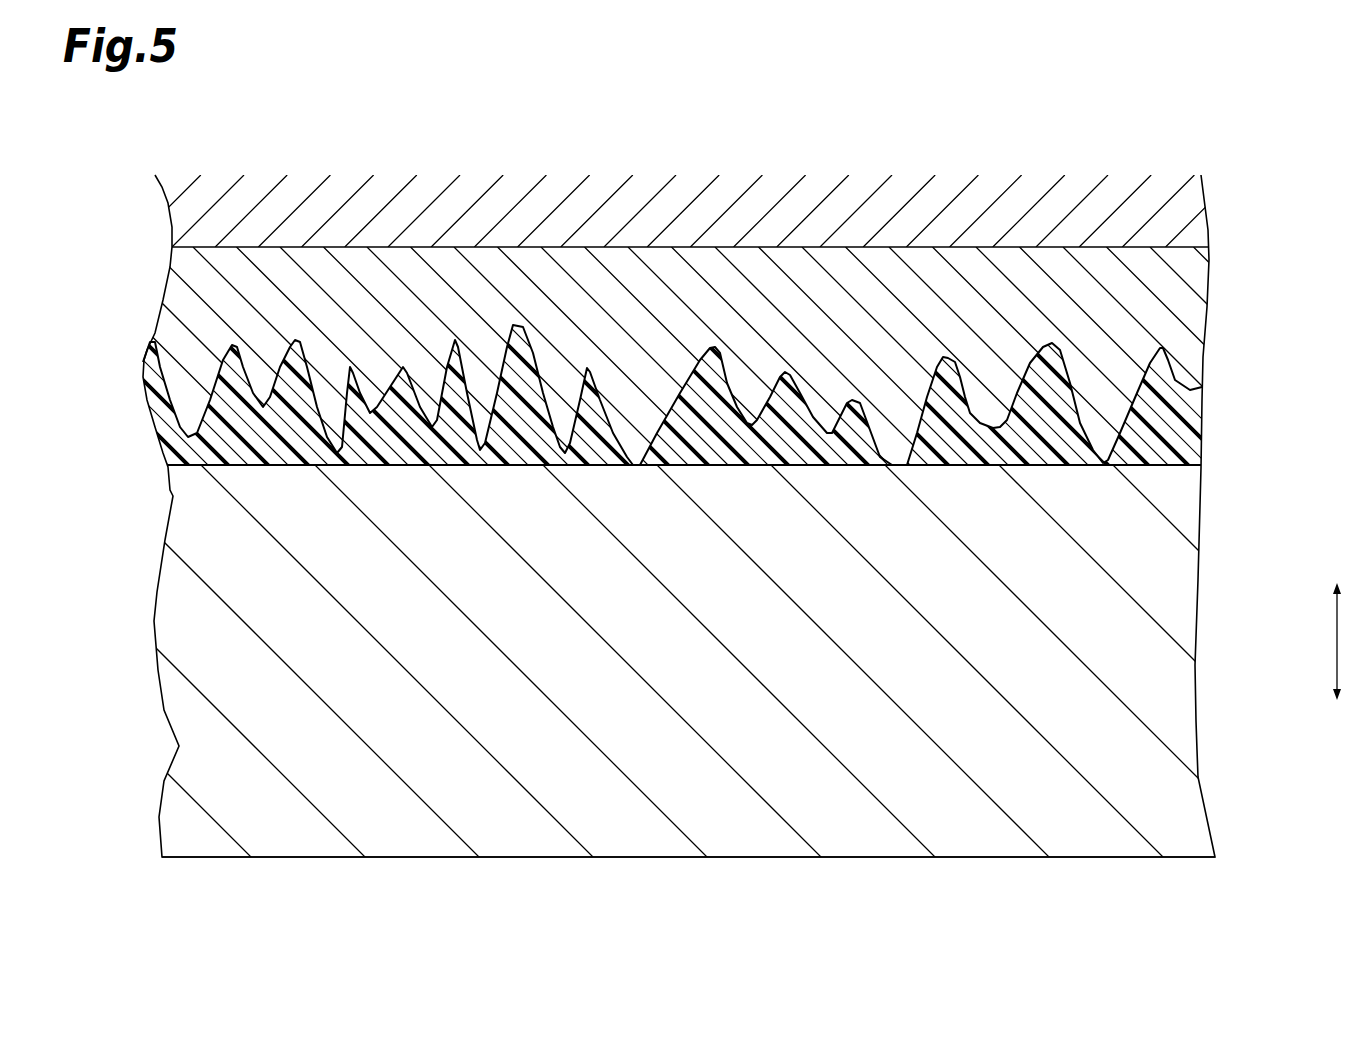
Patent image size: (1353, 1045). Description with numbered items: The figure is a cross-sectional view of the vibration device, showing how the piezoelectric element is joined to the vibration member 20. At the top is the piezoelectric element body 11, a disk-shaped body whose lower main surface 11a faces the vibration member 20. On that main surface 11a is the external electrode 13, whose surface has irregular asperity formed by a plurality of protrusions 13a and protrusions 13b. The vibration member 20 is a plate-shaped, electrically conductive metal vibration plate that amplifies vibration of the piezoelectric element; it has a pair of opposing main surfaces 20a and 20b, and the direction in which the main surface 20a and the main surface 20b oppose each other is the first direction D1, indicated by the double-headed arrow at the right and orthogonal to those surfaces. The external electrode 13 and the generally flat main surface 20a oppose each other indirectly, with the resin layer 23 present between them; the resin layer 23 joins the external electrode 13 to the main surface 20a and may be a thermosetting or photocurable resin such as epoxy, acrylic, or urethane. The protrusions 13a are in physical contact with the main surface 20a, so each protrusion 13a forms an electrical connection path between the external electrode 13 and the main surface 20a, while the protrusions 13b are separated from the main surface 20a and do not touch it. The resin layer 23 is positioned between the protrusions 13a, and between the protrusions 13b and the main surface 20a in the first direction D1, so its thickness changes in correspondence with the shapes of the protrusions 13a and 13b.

The piezoelectric element body 11 is at (1184, 205).
The main surface 11a is at (837, 250).
The external electrode 13 is at (1181, 303).
The protrusion 13a is at (334, 445).
The protrusion 13b is at (202, 427).
The vibration member 20 is at (1134, 642).
The main surface 20a is at (838, 859).
The main surface 20b is at (795, 437).
The resin layer 23 is at (1192, 429).
The first direction D1 is at (1332, 645).